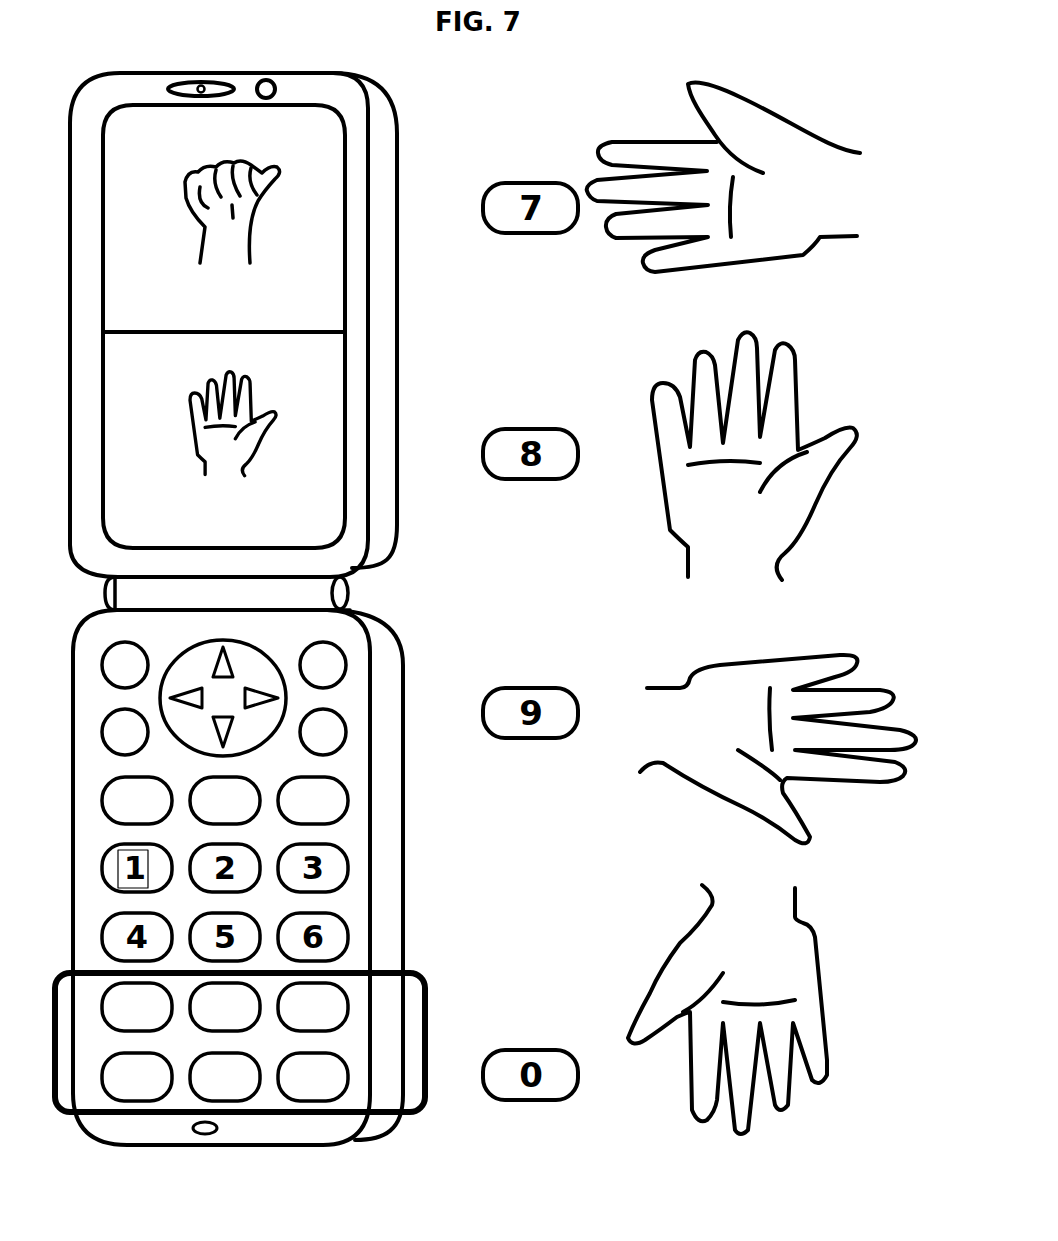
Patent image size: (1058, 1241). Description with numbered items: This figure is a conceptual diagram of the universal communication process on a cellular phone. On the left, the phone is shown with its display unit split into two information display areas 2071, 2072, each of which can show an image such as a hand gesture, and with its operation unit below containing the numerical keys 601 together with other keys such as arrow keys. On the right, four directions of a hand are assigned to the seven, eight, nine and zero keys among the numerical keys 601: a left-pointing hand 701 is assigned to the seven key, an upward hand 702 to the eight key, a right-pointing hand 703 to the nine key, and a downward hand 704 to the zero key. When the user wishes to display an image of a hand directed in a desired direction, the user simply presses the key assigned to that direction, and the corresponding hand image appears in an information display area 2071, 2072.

The information display area 2071 is at (333, 167).
The information display area 2072 is at (333, 372).
The numerical keys 601 is at (428, 847).
The left-pointing hand 701 is at (657, 135).
The upward hand 702 is at (667, 362).
The right-pointing hand 703 is at (668, 682).
The downward hand 704 is at (672, 923).